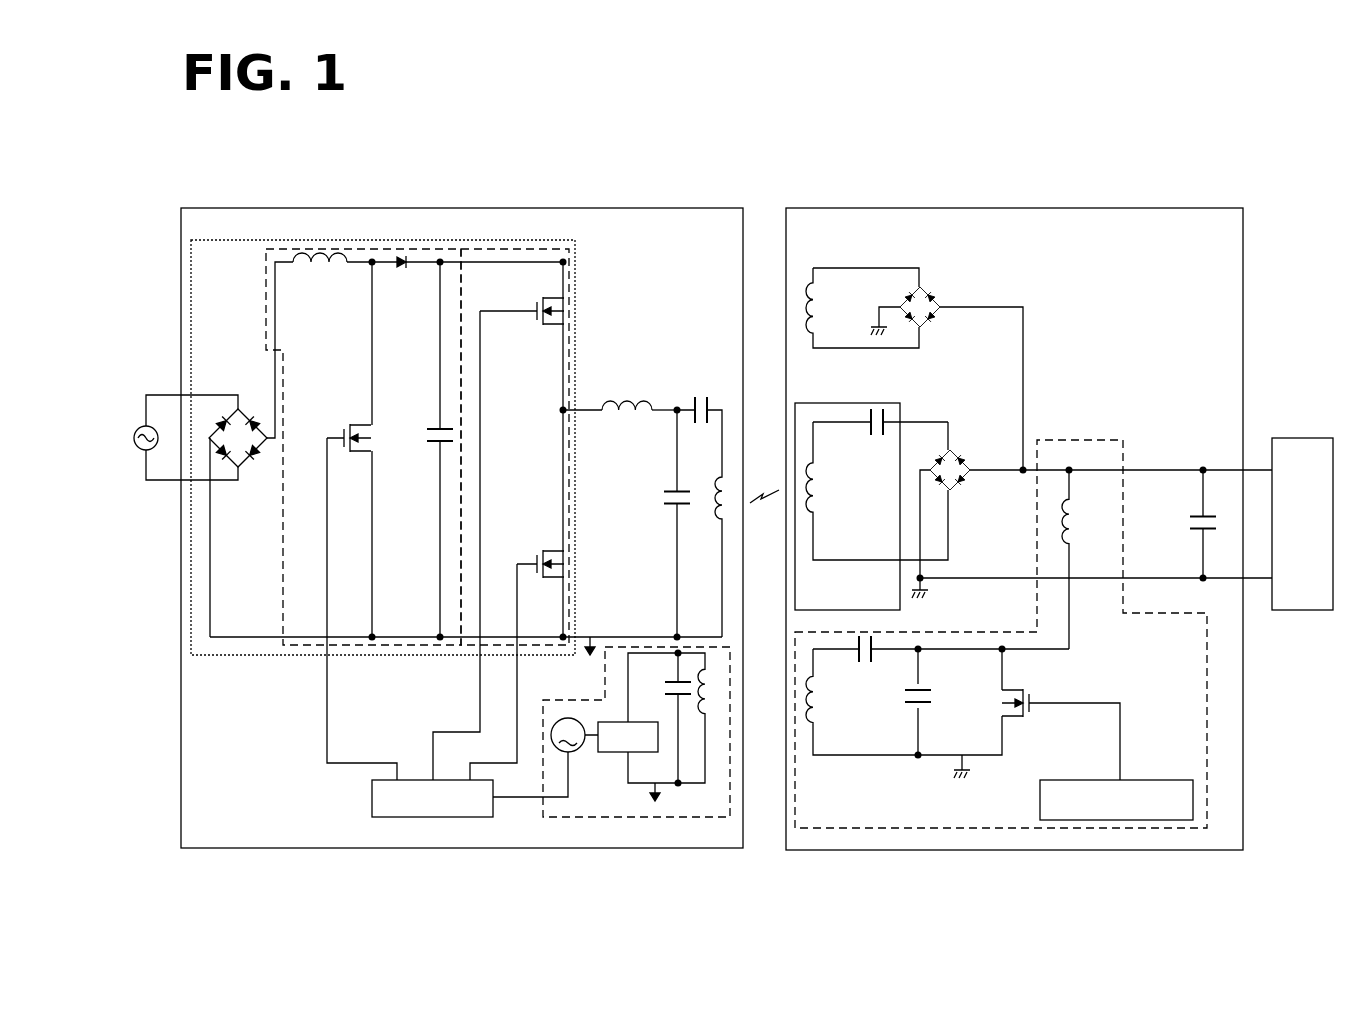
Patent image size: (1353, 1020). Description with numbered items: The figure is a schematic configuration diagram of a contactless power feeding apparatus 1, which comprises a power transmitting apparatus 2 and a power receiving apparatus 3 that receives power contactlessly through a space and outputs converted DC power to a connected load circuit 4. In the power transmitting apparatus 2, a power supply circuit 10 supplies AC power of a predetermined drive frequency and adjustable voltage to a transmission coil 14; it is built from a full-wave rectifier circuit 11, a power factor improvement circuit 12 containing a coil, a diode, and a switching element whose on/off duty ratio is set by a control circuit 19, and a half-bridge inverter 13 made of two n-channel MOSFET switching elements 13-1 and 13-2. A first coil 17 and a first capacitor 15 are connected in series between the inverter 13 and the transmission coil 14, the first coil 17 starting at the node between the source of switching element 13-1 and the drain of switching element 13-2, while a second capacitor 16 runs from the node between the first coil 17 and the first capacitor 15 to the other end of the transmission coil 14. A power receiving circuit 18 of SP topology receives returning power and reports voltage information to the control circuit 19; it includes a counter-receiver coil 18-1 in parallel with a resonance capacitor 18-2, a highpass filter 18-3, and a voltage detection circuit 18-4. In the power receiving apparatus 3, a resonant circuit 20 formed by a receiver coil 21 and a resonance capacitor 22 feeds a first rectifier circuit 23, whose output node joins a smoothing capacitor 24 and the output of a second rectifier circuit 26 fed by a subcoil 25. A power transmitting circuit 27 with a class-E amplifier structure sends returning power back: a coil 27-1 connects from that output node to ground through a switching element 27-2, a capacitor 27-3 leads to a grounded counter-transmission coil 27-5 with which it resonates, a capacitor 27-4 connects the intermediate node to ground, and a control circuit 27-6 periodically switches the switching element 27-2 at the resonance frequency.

The contactless power feeding apparatus 1 is at (1255, 879).
The power transmitting apparatus 2 is at (693, 848).
The power receiving apparatus 3 is at (1243, 852).
The load circuit 4 is at (1292, 610).
The power supply circuit 10 is at (557, 240).
The full-wave rectifier circuit 11 is at (256, 478).
The power factor improvement circuit 12 is at (400, 647).
The inverter 13 is at (540, 647).
The switching element 13-1 is at (537, 298).
The switching element 13-2 is at (555, 548).
The transmission coil 14 is at (712, 508).
The first capacitor 15 is at (702, 395).
The second capacitor 16 is at (672, 510).
The first coil 17 is at (624, 395).
The power receiving circuit 18 is at (583, 817).
The counter-receiver coil 18-1 is at (710, 722).
The resonance capacitor 18-2 is at (665, 688).
The highpass filter 18-3 is at (620, 752).
The voltage detection circuit 18-4 is at (578, 752).
The control circuit 19 is at (430, 817).
The resonant circuit 20 is at (900, 600).
The receiver coil 21 is at (828, 490).
The resonance capacitor 22 is at (877, 436).
The first rectifier circuit 23 is at (965, 455).
The smoothing capacitor 24 is at (1196, 512).
The subcoil 25 is at (825, 305).
The second rectifier circuit 26 is at (935, 292).
The power transmitting circuit 27 is at (953, 828).
The coil 27-1 is at (1080, 535).
The switching element 27-2 is at (1030, 688).
The capacitor 27-3 is at (865, 662).
The capacitor 27-4 is at (935, 700).
The counter-transmission coil 27-5 is at (828, 705).
The control circuit 27-6 is at (1090, 820).